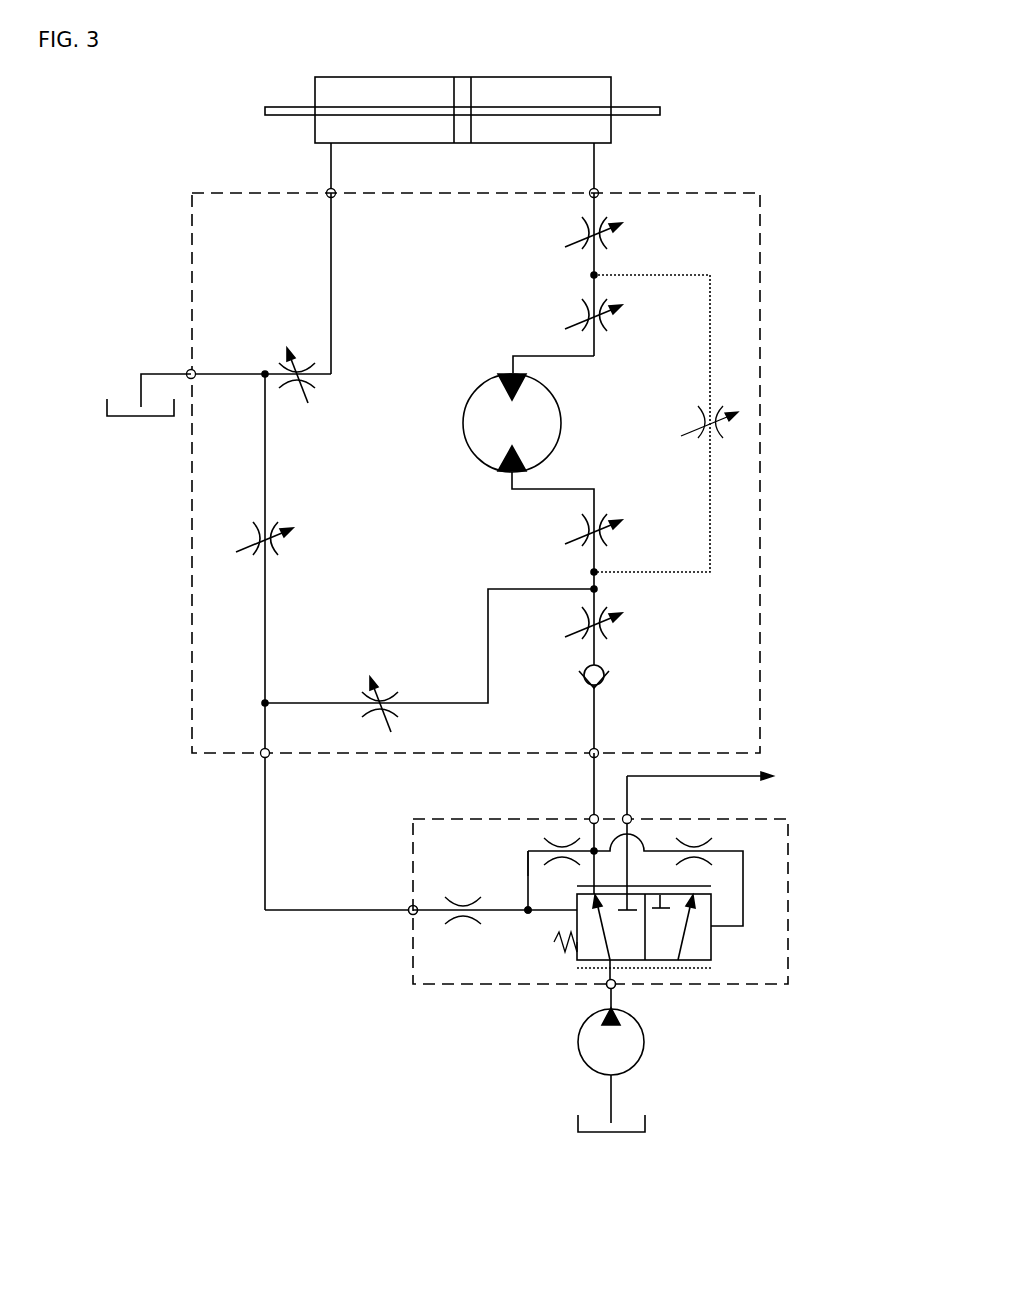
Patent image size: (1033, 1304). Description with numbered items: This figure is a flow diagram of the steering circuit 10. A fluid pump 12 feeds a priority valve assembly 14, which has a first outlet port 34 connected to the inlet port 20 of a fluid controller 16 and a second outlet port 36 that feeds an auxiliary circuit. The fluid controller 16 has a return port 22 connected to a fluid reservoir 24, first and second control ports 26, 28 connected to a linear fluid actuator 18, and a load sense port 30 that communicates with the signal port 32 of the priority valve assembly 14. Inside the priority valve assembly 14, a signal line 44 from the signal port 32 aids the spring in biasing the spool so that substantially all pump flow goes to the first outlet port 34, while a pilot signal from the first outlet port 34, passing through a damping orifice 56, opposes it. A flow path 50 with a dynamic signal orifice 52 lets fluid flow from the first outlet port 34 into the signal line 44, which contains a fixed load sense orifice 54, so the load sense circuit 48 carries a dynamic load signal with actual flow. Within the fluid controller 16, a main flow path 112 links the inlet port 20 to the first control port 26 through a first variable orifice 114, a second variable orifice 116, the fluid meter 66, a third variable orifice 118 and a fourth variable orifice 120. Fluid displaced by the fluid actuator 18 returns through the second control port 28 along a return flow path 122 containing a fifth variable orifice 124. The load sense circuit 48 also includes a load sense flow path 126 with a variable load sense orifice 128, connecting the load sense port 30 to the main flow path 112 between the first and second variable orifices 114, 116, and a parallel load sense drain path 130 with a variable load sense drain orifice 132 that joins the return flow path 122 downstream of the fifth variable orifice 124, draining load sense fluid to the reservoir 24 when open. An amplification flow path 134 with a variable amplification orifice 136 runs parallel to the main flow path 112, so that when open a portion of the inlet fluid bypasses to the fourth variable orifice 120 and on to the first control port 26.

The steering circuit 10 is at (141, 132).
The fluid pump 12 is at (645, 1038).
The priority valve assembly 14 is at (802, 880).
The fluid controller 16 is at (741, 183).
The fluid actuator 18 is at (611, 90).
The inlet port 20 is at (598, 750).
The return port 22 is at (188, 370).
The fluid reservoir 24 is at (165, 418).
The first control port 26 is at (598, 190).
The second control port 28 is at (327, 190).
The load sense port 30 is at (262, 756).
The signal port 32 is at (410, 913).
The first outlet port 34 is at (591, 816).
The second outlet port 36 is at (631, 817).
The signal line 44 is at (516, 912).
The load sense circuit 48 is at (428, 619).
The flow path 50 is at (528, 876).
The dynamic signal orifice 52 is at (563, 843).
The load sense orifice 54 is at (470, 920).
The damping orifice 56 is at (705, 845).
The fluid meter 66 is at (561, 423).
The main flow path 112 is at (484, 288).
The first variable orifice 114 is at (607, 638).
The second variable orifice 116 is at (607, 545).
The third variable orifice 118 is at (607, 328).
The fourth variable orifice 120 is at (607, 243).
The return flow path 122 is at (261, 298).
The fifth variable orifice 124 is at (309, 367).
The load sense flow path 126 is at (488, 638).
The variable load sense orifice 128 is at (392, 690).
The load sense drain path 130 is at (265, 473).
The variable load sense drain orifice 132 is at (272, 557).
The amplification flow path 134 is at (749, 348).
The variable amplification orifice 136 is at (717, 436).